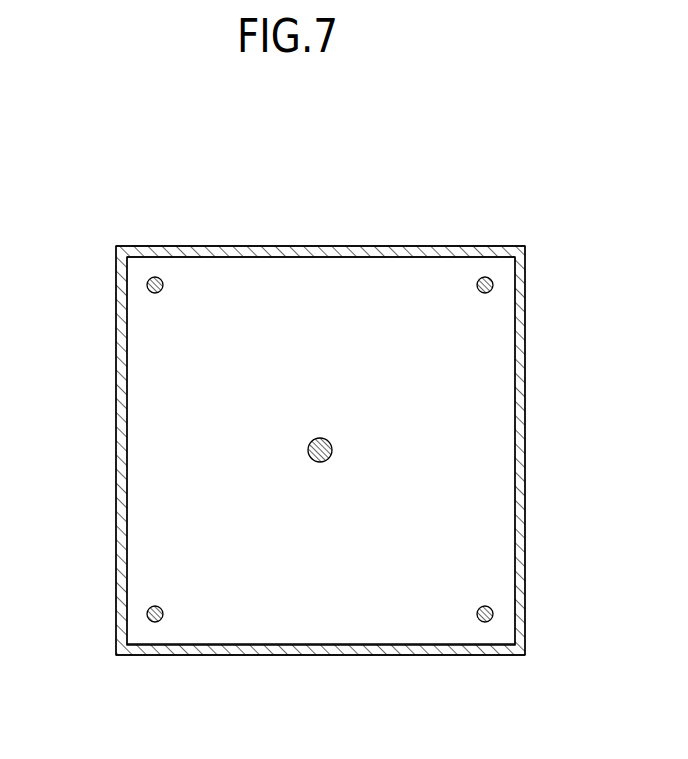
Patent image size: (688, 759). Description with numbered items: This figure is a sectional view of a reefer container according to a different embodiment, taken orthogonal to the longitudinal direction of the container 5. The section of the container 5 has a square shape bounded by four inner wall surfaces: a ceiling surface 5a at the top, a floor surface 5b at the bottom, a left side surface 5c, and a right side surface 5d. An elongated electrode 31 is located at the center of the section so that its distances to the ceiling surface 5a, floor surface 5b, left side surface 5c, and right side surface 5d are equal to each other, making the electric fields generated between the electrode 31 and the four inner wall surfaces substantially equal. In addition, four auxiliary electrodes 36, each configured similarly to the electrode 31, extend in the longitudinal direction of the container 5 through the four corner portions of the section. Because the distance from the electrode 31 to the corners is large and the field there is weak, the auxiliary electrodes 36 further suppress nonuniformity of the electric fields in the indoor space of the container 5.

The container 5 is at (472, 253).
The ceiling surface 5a is at (204, 252).
The floor surface 5b is at (418, 648).
The left side surface 5c is at (125, 432).
The right side surface 5d is at (516, 432).
The auxiliary electrodes 36 is at (158, 294).
The electrode 31 is at (330, 441).